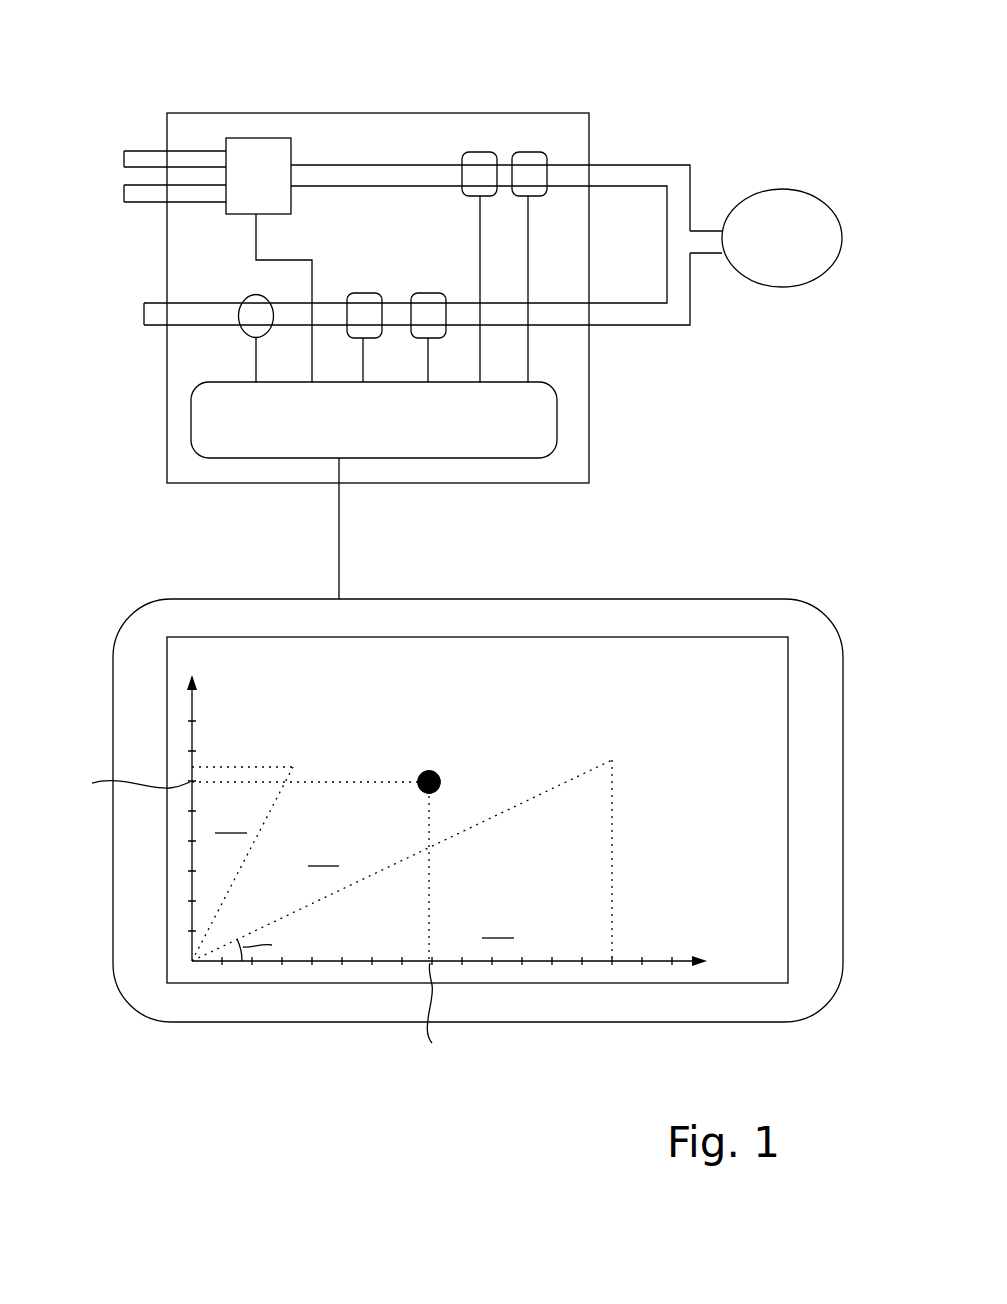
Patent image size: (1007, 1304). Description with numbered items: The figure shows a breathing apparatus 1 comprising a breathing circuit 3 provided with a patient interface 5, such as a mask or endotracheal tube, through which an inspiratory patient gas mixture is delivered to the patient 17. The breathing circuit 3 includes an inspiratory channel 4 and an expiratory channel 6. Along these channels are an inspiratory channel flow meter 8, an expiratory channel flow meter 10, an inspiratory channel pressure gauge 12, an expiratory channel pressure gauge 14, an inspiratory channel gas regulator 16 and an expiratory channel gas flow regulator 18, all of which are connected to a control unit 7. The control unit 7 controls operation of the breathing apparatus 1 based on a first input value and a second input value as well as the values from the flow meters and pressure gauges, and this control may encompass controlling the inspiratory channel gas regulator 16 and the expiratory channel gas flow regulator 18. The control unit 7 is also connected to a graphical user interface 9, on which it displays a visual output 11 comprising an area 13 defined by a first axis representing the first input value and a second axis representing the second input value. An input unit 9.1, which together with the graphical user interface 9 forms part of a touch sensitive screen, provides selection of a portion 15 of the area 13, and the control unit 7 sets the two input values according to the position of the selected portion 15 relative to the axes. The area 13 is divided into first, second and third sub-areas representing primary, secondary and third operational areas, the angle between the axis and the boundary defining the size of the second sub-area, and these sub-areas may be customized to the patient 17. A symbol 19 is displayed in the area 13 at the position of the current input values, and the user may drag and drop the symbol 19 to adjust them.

The breathing apparatus 1 is at (745, 52).
The breathing circuit 3 is at (630, 120).
The inspiratory channel 4 is at (677, 175).
The patient interface 5 is at (720, 253).
The expiratory channel 6 is at (677, 313).
The control unit 7 is at (378, 436).
The inspiratory channel flow meter 8 is at (530, 173).
The graphical user interface 9 is at (528, 598).
The input unit 9.1 is at (712, 672).
The expiratory channel flow meter 10 is at (428, 312).
The visual output 11 is at (733, 915).
The inspiratory channel pressure gauge 12 is at (480, 173).
The area 13 is at (387, 713).
The expiratory channel pressure gauge 14 is at (363, 312).
The portion 15 is at (436, 775).
The inspiratory channel gas regulator 16 is at (257, 175).
The patient 17 is at (797, 258).
The expiratory channel gas flow regulator 18 is at (255, 318).
The symbol 19 is at (429, 782).